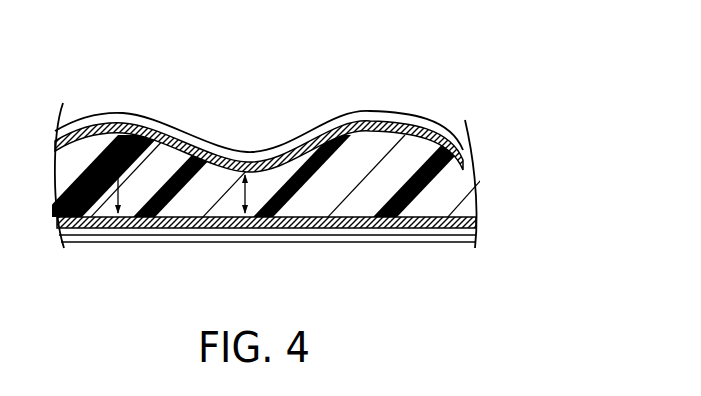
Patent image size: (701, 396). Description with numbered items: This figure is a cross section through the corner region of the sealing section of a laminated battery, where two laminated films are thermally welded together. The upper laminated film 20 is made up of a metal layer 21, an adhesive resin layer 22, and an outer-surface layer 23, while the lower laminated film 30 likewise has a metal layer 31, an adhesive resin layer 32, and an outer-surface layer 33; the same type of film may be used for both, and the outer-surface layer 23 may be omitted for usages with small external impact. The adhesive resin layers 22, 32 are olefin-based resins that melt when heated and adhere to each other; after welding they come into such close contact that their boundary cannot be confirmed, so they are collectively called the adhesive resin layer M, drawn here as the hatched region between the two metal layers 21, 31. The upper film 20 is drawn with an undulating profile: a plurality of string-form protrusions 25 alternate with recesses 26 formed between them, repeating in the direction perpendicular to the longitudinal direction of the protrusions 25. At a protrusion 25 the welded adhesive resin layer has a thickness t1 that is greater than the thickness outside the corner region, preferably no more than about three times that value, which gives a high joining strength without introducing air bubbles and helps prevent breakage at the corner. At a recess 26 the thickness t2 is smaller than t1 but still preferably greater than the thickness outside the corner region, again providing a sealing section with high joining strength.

The laminated film 20 is at (333, 118).
The metal layer 21 is at (386, 126).
The adhesive resin layer 22 is at (338, 176).
The outer-surface layer 23 is at (443, 128).
The protrusion 25 is at (118, 109).
The recess 26 is at (247, 149).
The laminated film 30 is at (333, 240).
The metal layer 31 is at (388, 230).
The adhesive resin layer 32 is at (470, 190).
The outer-surface layer 33 is at (441, 243).
The thickness of adhesive resin layer M at protrusion t1 is at (117, 177).
The thickness of adhesive resin layer M at recess t2 is at (243, 196).